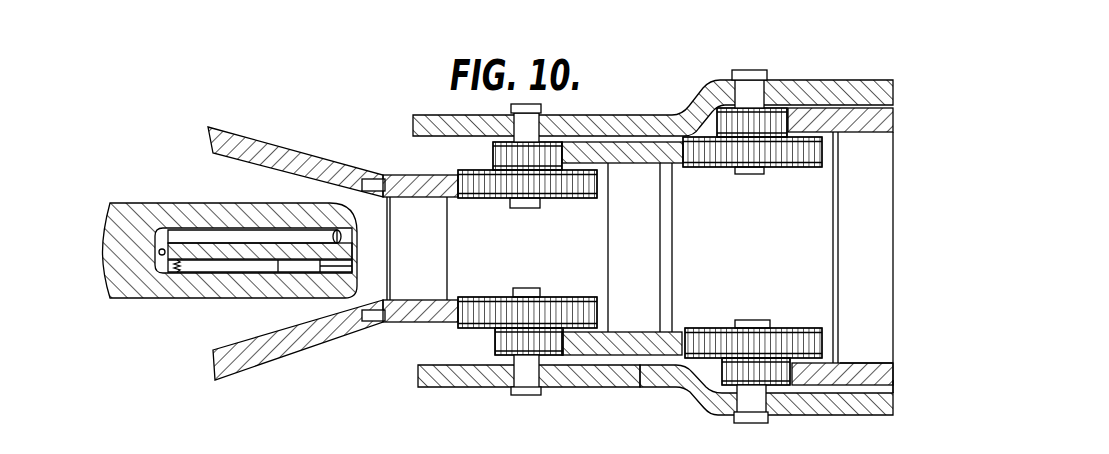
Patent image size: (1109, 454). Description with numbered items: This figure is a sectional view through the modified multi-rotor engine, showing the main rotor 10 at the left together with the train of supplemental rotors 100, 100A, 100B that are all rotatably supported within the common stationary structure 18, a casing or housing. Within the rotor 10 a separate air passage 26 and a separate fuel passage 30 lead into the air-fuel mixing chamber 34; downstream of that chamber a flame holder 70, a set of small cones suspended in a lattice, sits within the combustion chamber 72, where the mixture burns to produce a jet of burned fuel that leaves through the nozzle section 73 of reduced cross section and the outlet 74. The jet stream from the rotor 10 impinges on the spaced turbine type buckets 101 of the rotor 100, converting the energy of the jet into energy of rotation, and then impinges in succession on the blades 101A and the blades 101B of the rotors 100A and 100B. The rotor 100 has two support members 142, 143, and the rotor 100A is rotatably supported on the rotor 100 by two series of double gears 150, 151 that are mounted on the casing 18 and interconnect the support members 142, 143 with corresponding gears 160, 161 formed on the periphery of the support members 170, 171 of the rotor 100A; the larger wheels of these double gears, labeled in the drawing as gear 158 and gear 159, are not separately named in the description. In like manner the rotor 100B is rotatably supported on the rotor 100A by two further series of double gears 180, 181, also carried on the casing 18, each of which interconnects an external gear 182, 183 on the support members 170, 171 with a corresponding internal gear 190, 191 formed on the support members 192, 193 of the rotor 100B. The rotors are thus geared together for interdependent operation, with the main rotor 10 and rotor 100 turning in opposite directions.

The rotor 10 is at (137, 300).
The stationary structure 18 is at (458, 383).
The air passage 26 is at (292, 232).
The fuel passage 30 is at (158, 253).
The air-fuel mixing chamber 34 is at (167, 233).
The flame holder 70 is at (177, 272).
The combustion chamber 72 is at (243, 268).
The nozzle section 73 is at (300, 268).
The outlet 74 is at (355, 265).
The supplemental rotor 100 is at (422, 297).
The supplemental rotor 100A is at (650, 328).
The supplemental rotor 100B is at (877, 357).
The turbine type buckets 101 is at (447, 245).
The blades 101A is at (650, 268).
The blades 101B is at (842, 253).
The support member 142 is at (295, 343).
The support member 143 is at (263, 150).
The double gears 150 is at (497, 342).
The double gears 151 is at (477, 164).
The lower drive gear 158 is at (455, 300).
The upper drive gear 159 is at (455, 199).
The gear 160 is at (570, 351).
The gear 161 is at (566, 148).
The support member 170 is at (672, 356).
The support member 171 is at (645, 147).
The double gears 180 is at (727, 385).
The double gears 181 is at (717, 163).
The external gear 182 is at (678, 330).
The external gear 183 is at (679, 170).
The internal gear 190 is at (803, 376).
The internal gear 191 is at (793, 112).
The support member 192 is at (897, 393).
The support member 193 is at (887, 120).